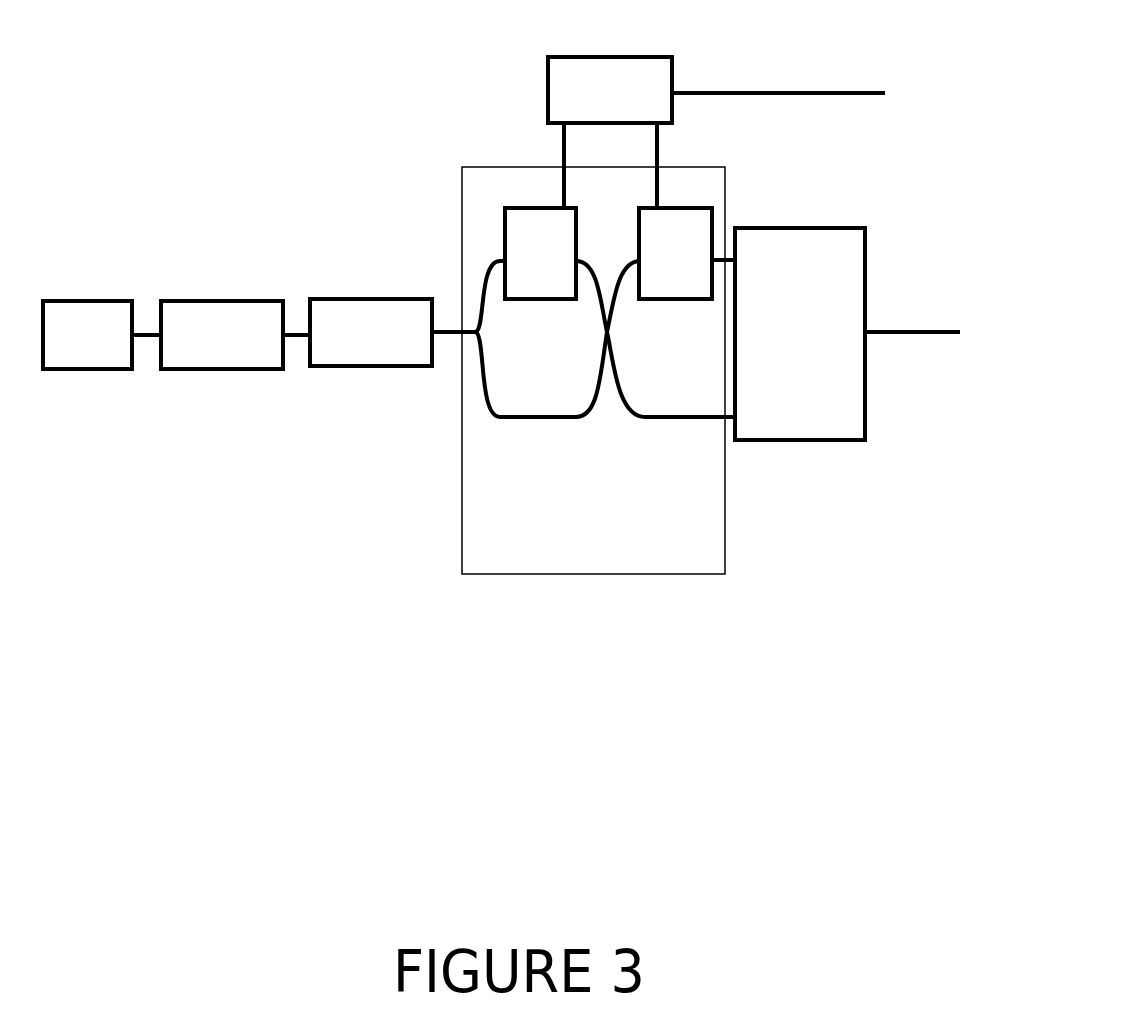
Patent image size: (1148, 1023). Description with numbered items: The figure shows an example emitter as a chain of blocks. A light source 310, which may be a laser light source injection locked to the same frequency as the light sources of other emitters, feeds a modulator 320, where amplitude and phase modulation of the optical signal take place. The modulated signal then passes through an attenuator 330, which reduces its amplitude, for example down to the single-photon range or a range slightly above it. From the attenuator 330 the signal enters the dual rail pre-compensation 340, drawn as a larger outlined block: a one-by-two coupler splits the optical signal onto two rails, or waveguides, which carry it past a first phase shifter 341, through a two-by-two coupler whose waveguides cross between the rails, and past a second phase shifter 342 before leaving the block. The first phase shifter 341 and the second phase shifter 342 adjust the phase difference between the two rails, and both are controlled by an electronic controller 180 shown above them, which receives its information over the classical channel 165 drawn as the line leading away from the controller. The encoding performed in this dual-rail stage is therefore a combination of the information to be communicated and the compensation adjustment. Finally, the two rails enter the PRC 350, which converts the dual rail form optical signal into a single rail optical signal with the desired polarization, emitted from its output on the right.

The classical channel 165 is at (761, 92).
The electronic controller 180 is at (610, 90).
The light source 310 is at (87, 335).
The modulator 320 is at (207, 335).
The attenuator 330 is at (379, 332).
The dual rail pre-compensation 340 is at (598, 370).
The first phase shifter 341 is at (540, 211).
The second phase shifter 342 is at (687, 211).
The PRC 350 is at (847, 334).